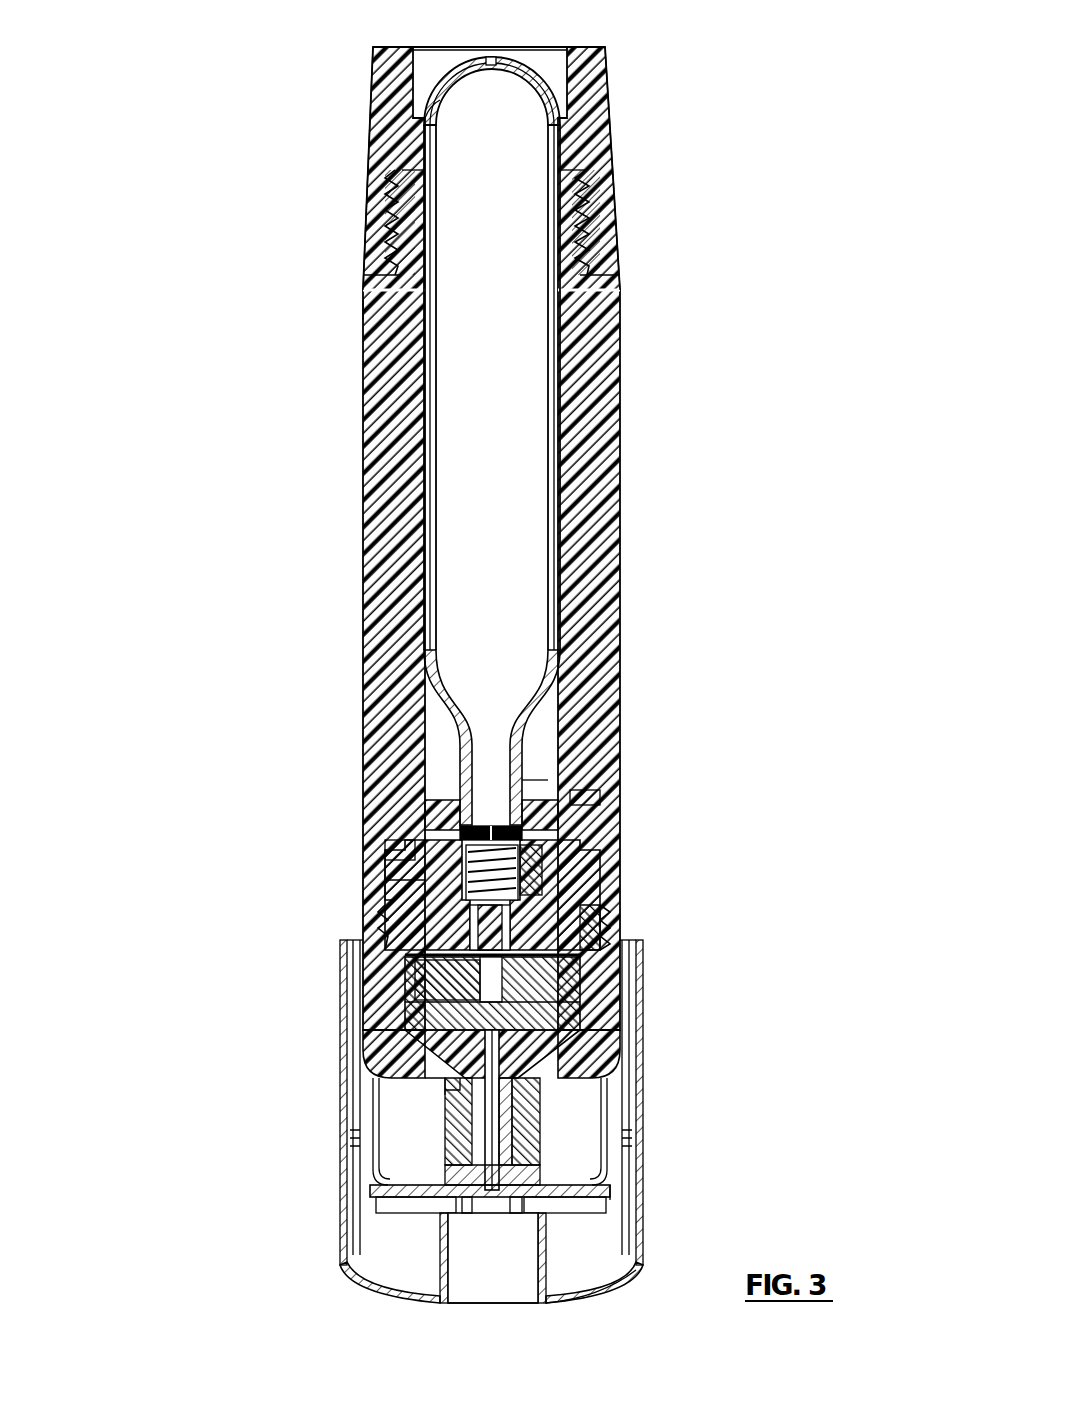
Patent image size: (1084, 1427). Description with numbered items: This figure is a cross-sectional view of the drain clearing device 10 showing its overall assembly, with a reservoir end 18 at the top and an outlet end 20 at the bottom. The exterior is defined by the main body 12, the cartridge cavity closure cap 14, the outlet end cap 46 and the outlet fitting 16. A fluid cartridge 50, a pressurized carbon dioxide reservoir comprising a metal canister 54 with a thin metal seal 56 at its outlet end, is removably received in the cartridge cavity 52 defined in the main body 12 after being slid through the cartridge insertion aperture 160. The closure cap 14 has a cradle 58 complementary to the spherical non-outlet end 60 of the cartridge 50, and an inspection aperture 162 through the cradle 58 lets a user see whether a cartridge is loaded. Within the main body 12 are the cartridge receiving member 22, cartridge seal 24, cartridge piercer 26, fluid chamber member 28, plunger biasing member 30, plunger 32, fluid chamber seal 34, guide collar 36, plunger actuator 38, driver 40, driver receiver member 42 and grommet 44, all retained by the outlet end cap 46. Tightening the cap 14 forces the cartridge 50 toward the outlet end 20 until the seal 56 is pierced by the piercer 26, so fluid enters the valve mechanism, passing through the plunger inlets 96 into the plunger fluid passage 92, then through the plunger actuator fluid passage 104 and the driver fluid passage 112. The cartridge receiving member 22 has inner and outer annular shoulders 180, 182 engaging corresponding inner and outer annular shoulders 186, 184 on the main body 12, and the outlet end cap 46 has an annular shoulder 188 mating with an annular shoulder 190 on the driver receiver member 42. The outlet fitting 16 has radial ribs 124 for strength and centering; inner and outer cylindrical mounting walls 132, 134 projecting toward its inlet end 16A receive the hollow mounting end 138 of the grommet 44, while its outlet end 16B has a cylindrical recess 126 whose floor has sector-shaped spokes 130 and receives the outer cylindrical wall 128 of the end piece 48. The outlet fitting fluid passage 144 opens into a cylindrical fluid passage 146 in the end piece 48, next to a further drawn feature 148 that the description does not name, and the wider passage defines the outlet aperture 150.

The drain clearing device 10 is at (295, 205).
The main body 12 is at (608, 552).
The cartridge cavity closure cap 14 is at (608, 125).
The outlet fitting 16 is at (630, 1208).
The inlet end 16A is at (340, 940).
The outlet end 16B is at (335, 1245).
The reservoir end 18 is at (355, 72).
The outlet end 20 is at (355, 1297).
The cartridge receiving member 22 is at (425, 798).
The cartridge seal 24 is at (524, 833).
The cartridge piercer 26 is at (532, 850).
The fluid chamber member 28 is at (600, 899).
The plunger biasing member 30 is at (545, 870).
The plunger 32 is at (600, 924).
The fluid chamber seal 34 is at (590, 942).
The guide collar 36 is at (545, 982).
The plunger actuator 38 is at (560, 1002).
The driver 40 is at (502, 1100).
The driver receiver member 42 is at (522, 1060).
The grommet 44 is at (548, 1120).
The outlet end cap 46 is at (600, 1022).
The end piece 48 is at (600, 1296).
The fluid cartridge 50 is at (535, 737).
The cartridge cavity 52 is at (540, 792).
The metal canister 54 is at (560, 785).
The seal 56 is at (600, 797).
The cradle 58 is at (578, 50).
The non-outlet end 60 is at (512, 85).
The plunger fluid passage 92 is at (560, 967).
The plunger inlets 96 is at (470, 995).
The plunger actuator fluid passage 104 is at (420, 1060).
The driver fluid passage 112 is at (445, 1100).
The radial ribs 124 is at (350, 1130).
The cylindrical recess 126 is at (622, 1198).
The outer cylindrical wall 128 is at (600, 1255).
The spokes 130 is at (385, 1200).
The inner cylindrical mounting wall 132 is at (488, 1295).
The outer cylindrical mounting wall 134 is at (520, 1120).
The mounting end 138 is at (470, 1167).
The outlet fitting fluid passage 144 is at (468, 1215).
The cylindrical fluid passage 146 is at (516, 1215).
The side wall 148 is at (455, 1305).
The outlet aperture 150 is at (528, 1312).
The cartridge insertion aperture 160 is at (572, 205).
The inspection aperture 162 is at (440, 100).
The inner annular shoulder 180 is at (420, 842).
The outer annular shoulder 182 is at (400, 862).
The outer annular shoulder 184 is at (420, 880).
The inner annular shoulder 186 is at (420, 906).
The annular shoulder 188 is at (432, 1070).
The annular shoulder 190 is at (465, 1085).